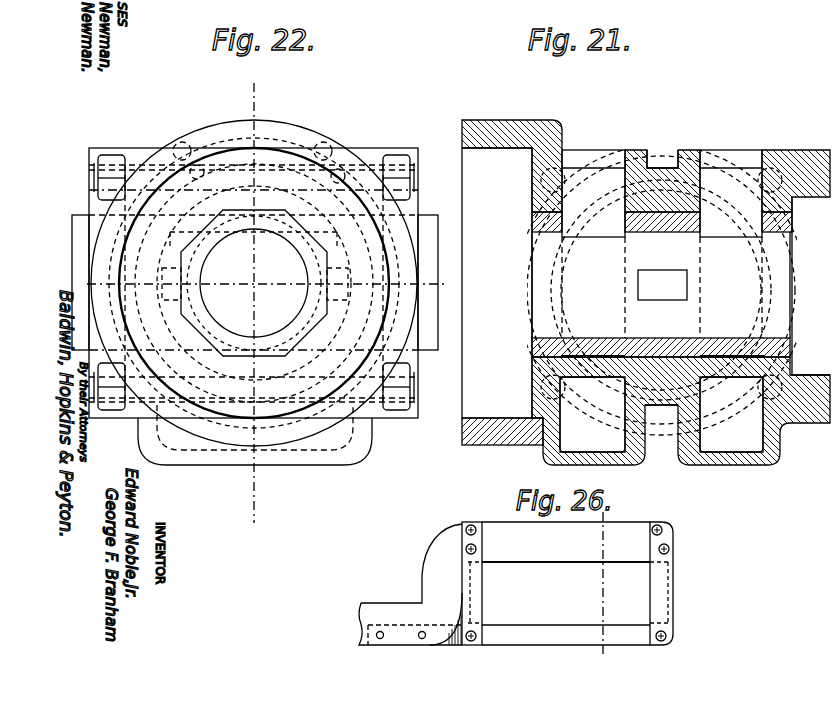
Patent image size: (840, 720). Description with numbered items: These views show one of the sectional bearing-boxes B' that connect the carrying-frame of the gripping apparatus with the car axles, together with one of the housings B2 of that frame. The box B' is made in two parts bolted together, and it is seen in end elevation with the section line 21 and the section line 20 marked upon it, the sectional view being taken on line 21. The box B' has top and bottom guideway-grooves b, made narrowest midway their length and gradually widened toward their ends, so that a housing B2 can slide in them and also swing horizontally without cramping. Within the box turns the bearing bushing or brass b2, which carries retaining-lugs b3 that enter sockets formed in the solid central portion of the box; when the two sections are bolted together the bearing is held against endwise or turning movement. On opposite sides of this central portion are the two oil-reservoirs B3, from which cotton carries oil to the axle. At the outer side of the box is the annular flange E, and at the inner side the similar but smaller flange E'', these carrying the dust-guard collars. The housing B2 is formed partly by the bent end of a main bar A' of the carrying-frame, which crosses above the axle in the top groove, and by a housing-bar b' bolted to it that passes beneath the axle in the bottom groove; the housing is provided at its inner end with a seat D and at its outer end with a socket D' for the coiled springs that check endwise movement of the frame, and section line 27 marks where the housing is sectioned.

In FIG. 22, the section line 20 is at (254, 113).
In FIG. 22, the section line 21 is at (297, 88).
In FIG. 26, the section line 27 is at (603, 590).
In FIG. 22, the sectional bearing-box B' is at (257, 283).
In FIG. 21, the sectional bearing-box B' is at (673, 293).
In FIG. 22, the outer annular flange E is at (255, 435).
In FIG. 21, the outer annular flange E is at (512, 282).
In FIG. 21, the inner annular flange E'' is at (811, 286).
In FIG. 21, the guideway-groove b is at (661, 301).
In FIG. 22, the bearing bushing or brass b2 is at (254, 283).
In FIG. 21, the bearing bushing or brass b2 is at (661, 244).
In FIG. 22, the retaining-lug b3 is at (255, 266).
In FIG. 21, the retaining-lug b3 is at (662, 285).
In FIG. 21, the oil-reservoir B3 is at (661, 414).
In FIG. 26, the main bar A' is at (410, 584).
In FIG. 26, the socket or seat D is at (482, 583).
In FIG. 26, the socket D' is at (649, 583).
In FIG. 26, the housing B2 is at (566, 583).
In FIG. 26, the housing-bar b' is at (566, 614).